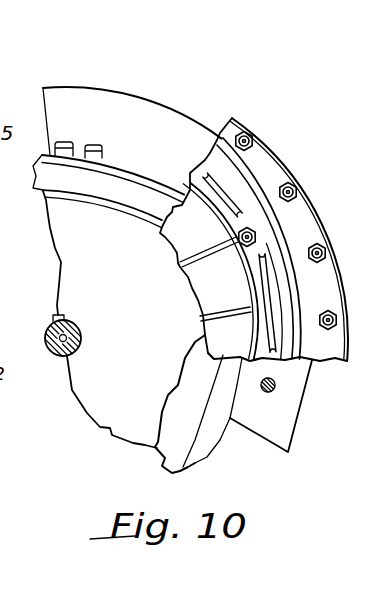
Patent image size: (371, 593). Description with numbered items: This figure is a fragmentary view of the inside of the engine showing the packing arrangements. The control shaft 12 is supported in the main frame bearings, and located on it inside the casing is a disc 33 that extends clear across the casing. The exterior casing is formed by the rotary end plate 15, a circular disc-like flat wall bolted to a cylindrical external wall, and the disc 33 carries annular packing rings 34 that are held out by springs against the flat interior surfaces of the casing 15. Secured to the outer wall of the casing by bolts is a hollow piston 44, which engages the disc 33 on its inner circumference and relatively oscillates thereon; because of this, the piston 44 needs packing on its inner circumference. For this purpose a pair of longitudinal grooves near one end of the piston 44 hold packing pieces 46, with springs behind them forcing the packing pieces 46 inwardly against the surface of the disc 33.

The control shaft 12 is at (70, 227).
The rotary end plate 15 is at (275, 162).
The disc 33 is at (97, 400).
The annular packing rings 34 is at (146, 190).
The piston 44 is at (158, 115).
The packing pieces 46 is at (89, 141).